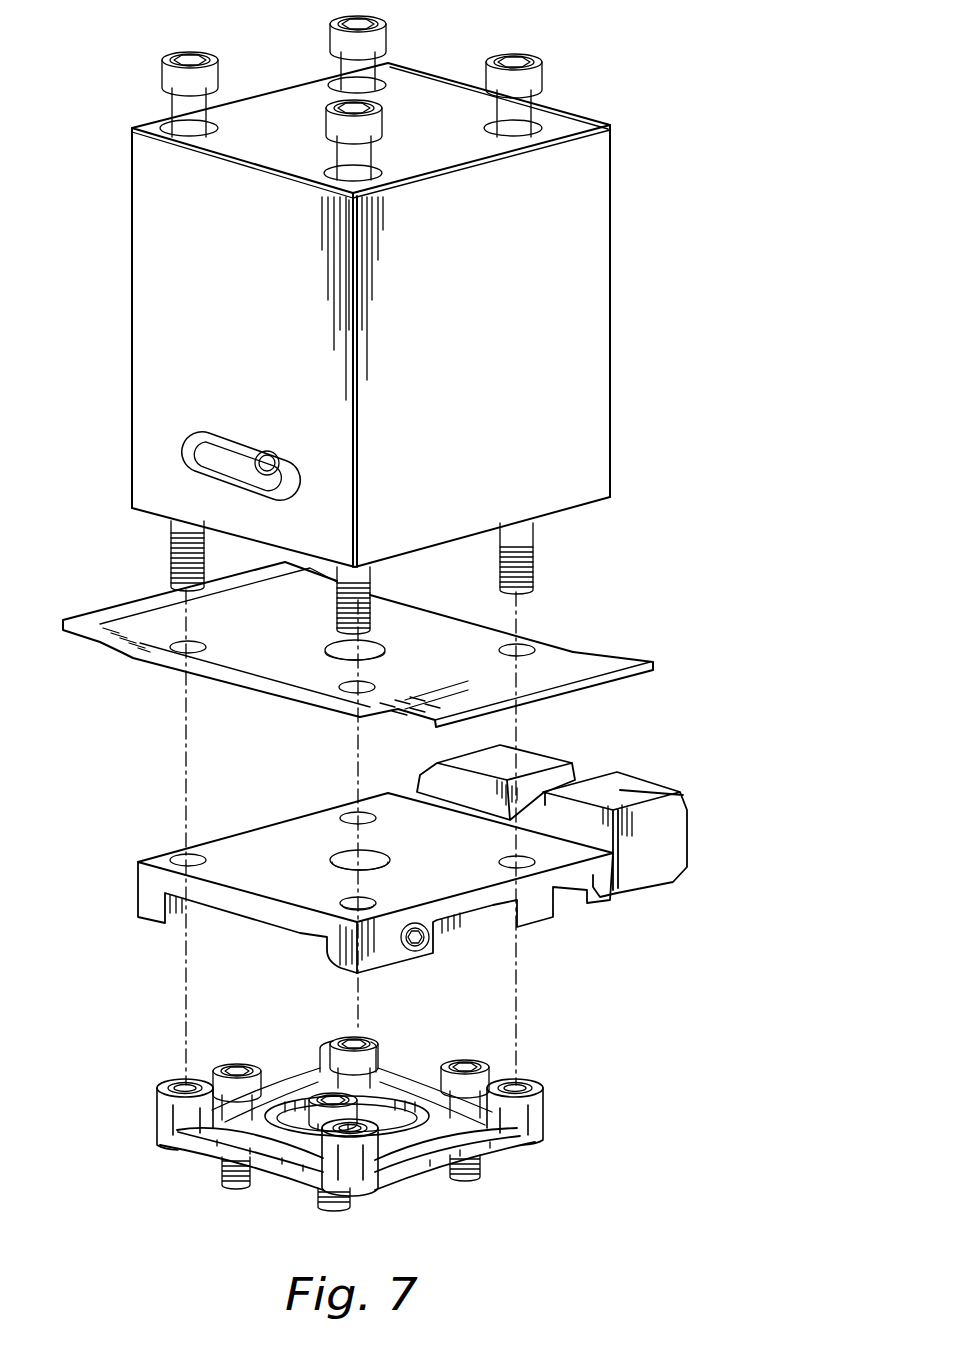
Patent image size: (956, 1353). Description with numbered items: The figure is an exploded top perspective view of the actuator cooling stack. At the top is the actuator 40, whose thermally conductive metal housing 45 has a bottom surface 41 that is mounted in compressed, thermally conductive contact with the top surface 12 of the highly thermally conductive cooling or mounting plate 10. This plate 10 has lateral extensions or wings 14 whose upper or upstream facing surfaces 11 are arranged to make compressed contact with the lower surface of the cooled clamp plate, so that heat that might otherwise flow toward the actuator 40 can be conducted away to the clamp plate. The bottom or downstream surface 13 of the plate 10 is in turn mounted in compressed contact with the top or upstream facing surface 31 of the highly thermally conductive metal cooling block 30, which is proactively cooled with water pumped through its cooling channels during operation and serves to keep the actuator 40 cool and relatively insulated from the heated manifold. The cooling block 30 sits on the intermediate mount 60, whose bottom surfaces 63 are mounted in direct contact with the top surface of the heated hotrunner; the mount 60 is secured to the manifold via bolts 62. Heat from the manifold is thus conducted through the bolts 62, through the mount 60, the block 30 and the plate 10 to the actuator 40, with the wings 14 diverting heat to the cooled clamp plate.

The cooling or mounting plate 10 is at (572, 637).
The upper or upstream facing surface 11 is at (125, 604).
The top surface 12 is at (502, 640).
The bottom or downstream surface 13 is at (273, 700).
The lateral extensions or wings 14 is at (103, 642).
The cooling block 30 is at (128, 871).
The top or upstream facing surface 31 is at (277, 836).
The actuator 40 is at (615, 140).
The bottom surface 41 is at (582, 507).
The thermally conductive metal housing 45 is at (605, 248).
The mount 60 is at (552, 1089).
The bolts 62 is at (322, 1096).
The bottom surfaces 63 is at (220, 1157).